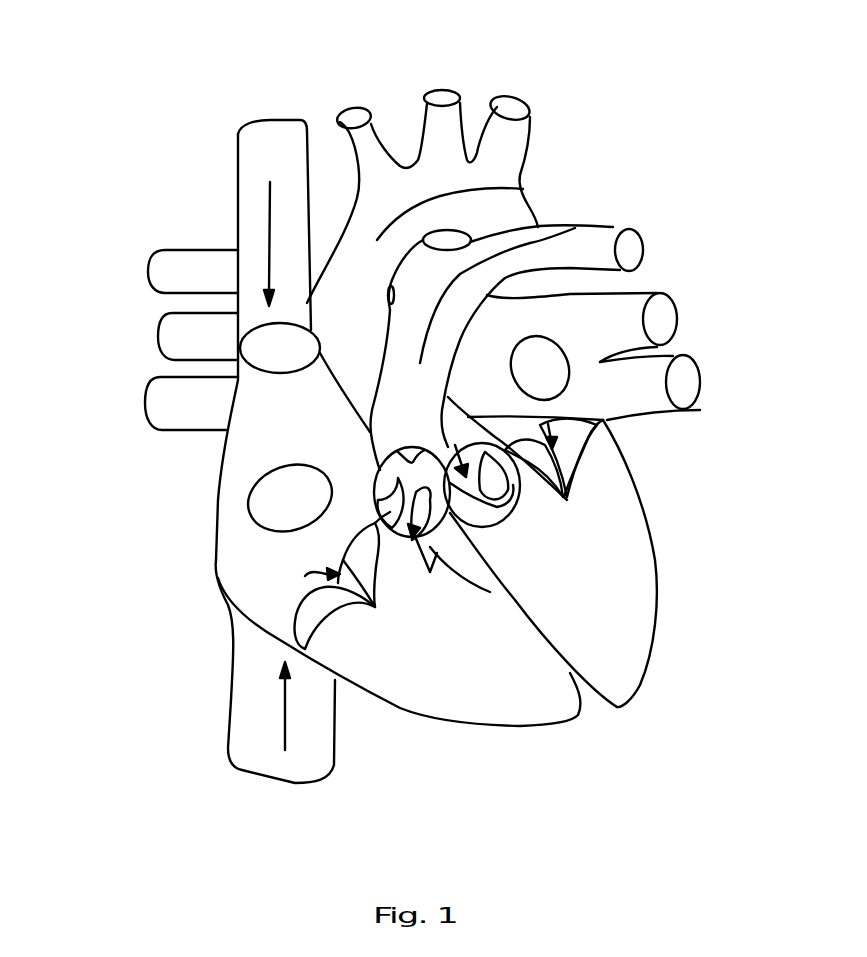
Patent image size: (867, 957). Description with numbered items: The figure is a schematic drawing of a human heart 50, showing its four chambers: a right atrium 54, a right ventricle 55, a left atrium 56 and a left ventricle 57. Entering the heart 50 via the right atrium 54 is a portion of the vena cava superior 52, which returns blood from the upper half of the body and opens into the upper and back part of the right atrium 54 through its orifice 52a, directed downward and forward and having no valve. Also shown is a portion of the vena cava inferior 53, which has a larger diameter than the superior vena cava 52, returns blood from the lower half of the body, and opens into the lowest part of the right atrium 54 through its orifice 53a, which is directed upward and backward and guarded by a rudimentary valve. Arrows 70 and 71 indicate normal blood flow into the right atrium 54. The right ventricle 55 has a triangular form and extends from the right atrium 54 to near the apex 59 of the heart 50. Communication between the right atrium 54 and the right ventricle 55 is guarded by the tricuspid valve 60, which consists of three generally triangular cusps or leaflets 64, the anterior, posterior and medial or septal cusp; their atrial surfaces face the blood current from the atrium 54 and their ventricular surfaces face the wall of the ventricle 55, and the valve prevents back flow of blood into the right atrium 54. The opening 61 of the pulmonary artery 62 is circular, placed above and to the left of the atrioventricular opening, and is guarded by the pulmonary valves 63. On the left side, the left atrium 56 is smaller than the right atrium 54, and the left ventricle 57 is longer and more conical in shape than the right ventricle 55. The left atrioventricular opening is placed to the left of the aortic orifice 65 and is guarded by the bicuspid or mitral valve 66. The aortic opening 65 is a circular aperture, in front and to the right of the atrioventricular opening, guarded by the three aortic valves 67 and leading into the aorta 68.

The human heart 50 is at (86, 140).
The vena cava superior 52 is at (247, 178).
The arrow 70 is at (268, 217).
The orifice of the superior vena cava 52a is at (267, 347).
The opening of the pulmonary artery 61 is at (403, 457).
The orifice of the inferior vena cava 53a is at (278, 496).
The right atrium 54 is at (268, 558).
The tricuspid valve 60 is at (305, 576).
The leaflets 64 is at (313, 614).
The vena cava inferior 53 is at (257, 680).
The arrow 71 is at (280, 722).
The right ventricle 55 is at (447, 677).
The apex 59 is at (590, 734).
The left ventricle 57 is at (623, 607).
The pulmonary valves 63 is at (490, 594).
The aortic orifice 65 is at (515, 512).
The mitral valve 66 is at (607, 420).
The aortic valves 67 is at (560, 409).
The left atrium 56 is at (485, 340).
The pulmonary artery 62 is at (557, 227).
The aorta 68 is at (530, 182).